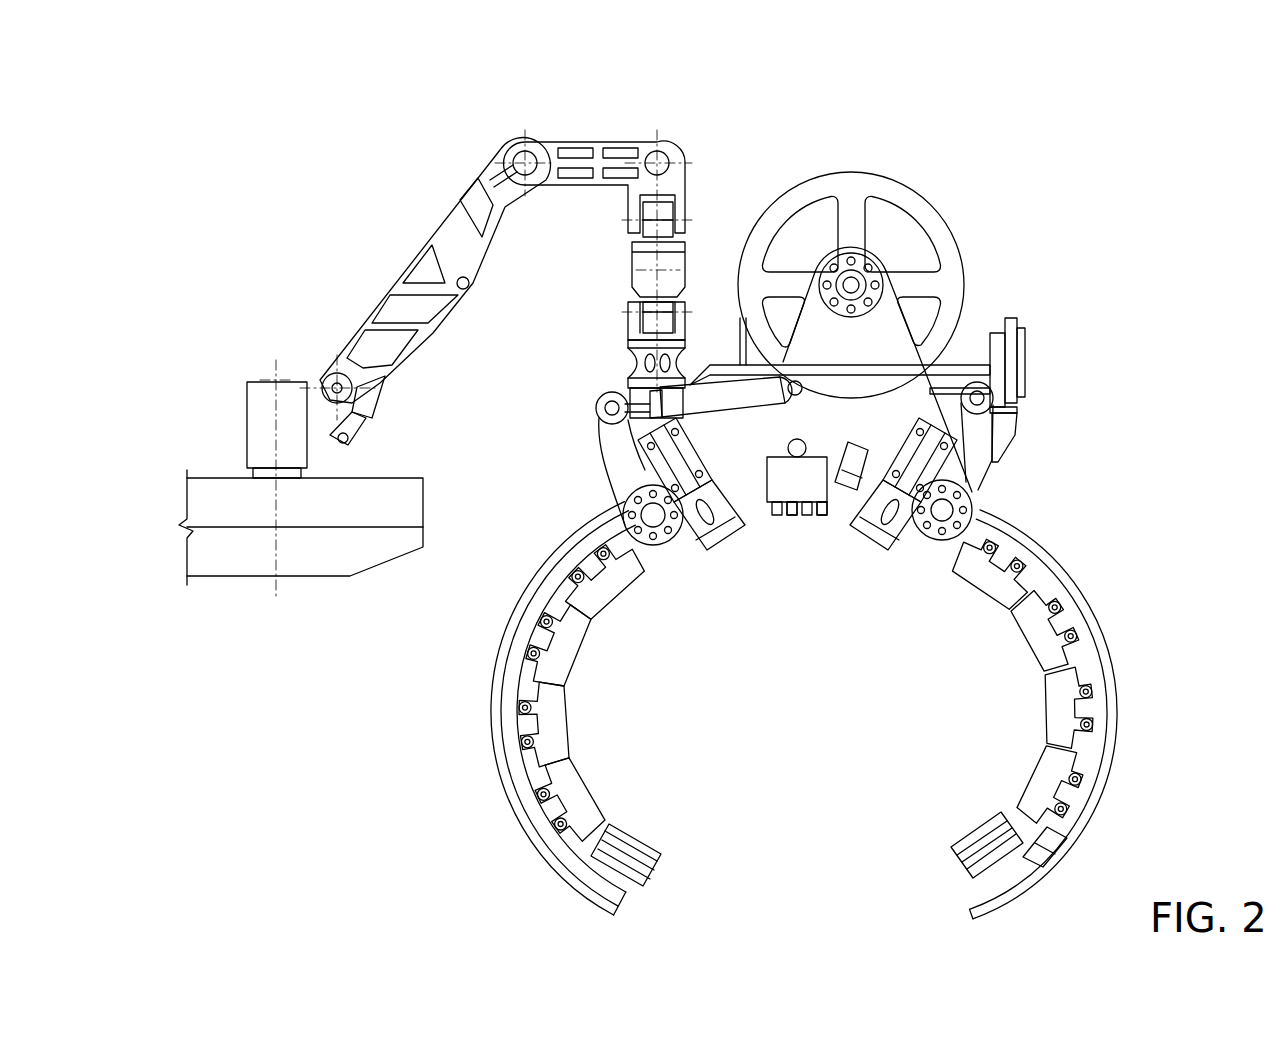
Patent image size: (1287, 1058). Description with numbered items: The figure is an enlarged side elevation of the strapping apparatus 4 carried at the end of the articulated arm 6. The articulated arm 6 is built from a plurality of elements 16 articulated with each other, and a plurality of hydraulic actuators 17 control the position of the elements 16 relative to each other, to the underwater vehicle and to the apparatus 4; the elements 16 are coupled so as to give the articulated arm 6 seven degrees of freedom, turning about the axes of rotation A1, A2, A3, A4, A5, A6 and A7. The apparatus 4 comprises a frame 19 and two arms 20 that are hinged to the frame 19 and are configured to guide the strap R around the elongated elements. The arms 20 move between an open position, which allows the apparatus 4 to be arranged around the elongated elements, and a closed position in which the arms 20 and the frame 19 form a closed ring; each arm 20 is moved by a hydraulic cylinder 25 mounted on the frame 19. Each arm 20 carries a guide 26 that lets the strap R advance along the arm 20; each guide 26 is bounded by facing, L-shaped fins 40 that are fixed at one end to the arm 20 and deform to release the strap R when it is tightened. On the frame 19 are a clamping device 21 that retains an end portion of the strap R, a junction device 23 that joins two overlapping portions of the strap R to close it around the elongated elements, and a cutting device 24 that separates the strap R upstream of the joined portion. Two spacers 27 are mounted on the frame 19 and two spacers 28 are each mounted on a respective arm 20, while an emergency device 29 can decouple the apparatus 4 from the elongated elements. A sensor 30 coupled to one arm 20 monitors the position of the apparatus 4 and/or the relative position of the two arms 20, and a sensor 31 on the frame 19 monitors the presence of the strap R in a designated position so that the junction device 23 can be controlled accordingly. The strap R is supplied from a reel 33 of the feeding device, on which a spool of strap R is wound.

The apparatus 4 is at (1145, 440).
The articulated arm 6 is at (420, 140).
The elements 16 is at (247, 435).
The hydraulic actuators 17 is at (373, 405).
The frame 19 is at (887, 330).
The arms 20 is at (513, 723).
The clamping device 21 is at (772, 520).
The junction device 23 is at (818, 528).
The cutting device 24 is at (789, 528).
The hydraulic cylinder 25 is at (612, 408).
The guide 26 is at (595, 753).
The spacers 27 is at (625, 530).
The spacers 28 is at (650, 847).
The emergency device 29 is at (1000, 365).
The sensor 30 is at (1052, 852).
The sensor 31 is at (843, 500).
The reel 33 is at (878, 190).
The fins 40 is at (553, 640).
The strap R is at (740, 360).
The axis of rotation A1 is at (260, 368).
The axis of rotation A2 is at (310, 368).
The axis of rotation A3 is at (508, 140).
The axis of rotation A4 is at (645, 130).
The axis of rotation A5 is at (615, 210).
The axis of rotation A6 is at (632, 268).
The axis of rotation A7 is at (690, 307).